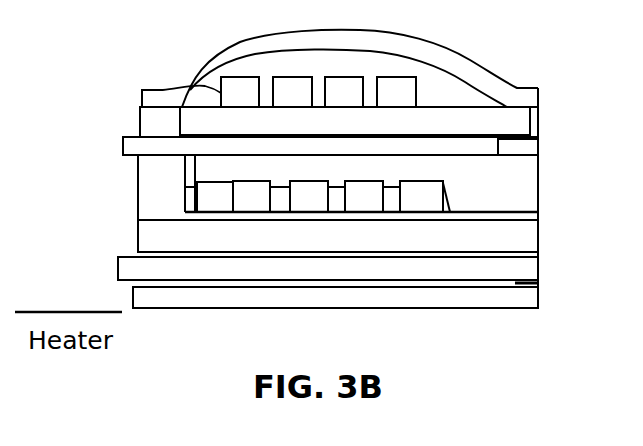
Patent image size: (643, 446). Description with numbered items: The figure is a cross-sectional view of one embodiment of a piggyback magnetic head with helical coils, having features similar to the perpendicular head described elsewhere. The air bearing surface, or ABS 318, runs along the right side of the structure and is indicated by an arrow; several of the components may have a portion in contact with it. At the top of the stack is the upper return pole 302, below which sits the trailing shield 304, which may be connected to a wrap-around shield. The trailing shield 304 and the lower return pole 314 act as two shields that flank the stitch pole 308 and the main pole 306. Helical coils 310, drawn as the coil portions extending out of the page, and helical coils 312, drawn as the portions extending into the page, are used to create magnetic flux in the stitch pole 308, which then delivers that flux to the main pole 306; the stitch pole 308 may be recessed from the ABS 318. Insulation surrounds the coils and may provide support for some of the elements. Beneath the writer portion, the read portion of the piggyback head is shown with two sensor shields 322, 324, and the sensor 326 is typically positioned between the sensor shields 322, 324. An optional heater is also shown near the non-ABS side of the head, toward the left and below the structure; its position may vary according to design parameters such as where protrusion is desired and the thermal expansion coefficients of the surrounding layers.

The upper return pole 302 is at (473, 63).
The trailing shield 304 is at (539, 120).
The main pole 306 is at (540, 145).
The stitch pole 308 is at (490, 157).
The helical coils 310 is at (163, 90).
The helical coils 312 is at (237, 178).
The lower return pole 314 is at (376, 245).
The ABS 318 is at (553, 225).
The sensor shield 322 is at (118, 268).
The sensor shield 324 is at (133, 297).
The sensor 326 is at (530, 283).